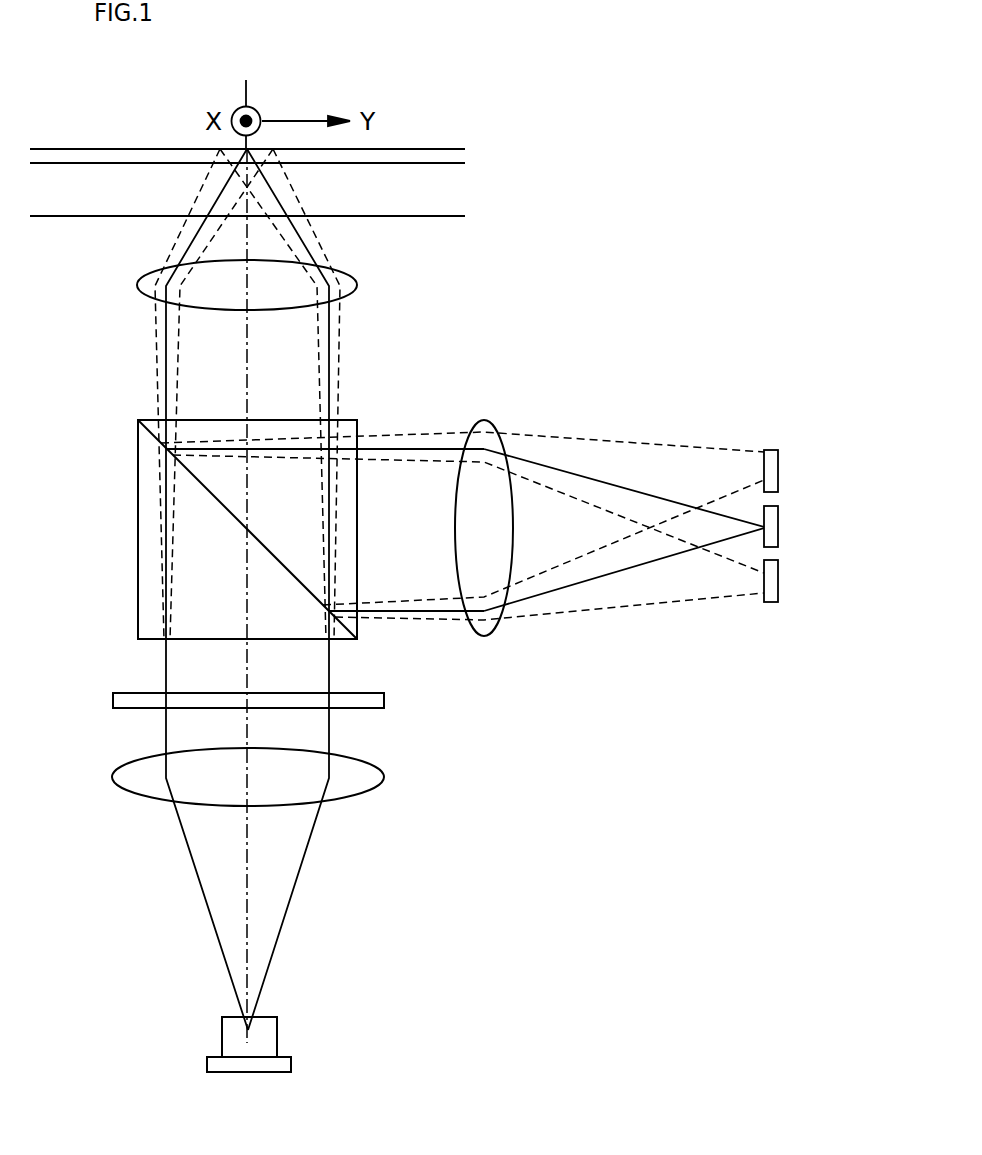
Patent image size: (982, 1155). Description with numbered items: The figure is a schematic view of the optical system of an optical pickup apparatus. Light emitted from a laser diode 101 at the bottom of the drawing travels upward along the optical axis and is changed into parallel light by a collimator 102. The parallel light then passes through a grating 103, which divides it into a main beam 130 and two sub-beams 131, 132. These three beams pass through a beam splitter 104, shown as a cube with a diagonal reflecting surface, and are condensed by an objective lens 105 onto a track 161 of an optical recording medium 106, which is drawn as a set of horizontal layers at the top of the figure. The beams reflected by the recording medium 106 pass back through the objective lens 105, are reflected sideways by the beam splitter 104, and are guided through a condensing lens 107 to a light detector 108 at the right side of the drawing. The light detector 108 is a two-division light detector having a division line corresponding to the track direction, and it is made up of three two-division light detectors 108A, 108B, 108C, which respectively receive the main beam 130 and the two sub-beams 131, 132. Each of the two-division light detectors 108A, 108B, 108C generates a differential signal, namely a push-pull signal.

The laser diode 101 is at (228, 1037).
The collimator 102 is at (127, 777).
The grating 103 is at (120, 701).
The beam splitter 104 is at (146, 533).
The objective lens 105 is at (203, 300).
The optical recording medium 106 is at (144, 182).
The condensing lens 107 is at (483, 421).
The light detector 108 is at (843, 526).
The two-division light detector 108A is at (778, 527).
The two-division light detector 108B is at (778, 471).
The two-division light detector 108C is at (778, 585).
The main beam 130 is at (331, 355).
The sub-beam 131 is at (343, 326).
The sub-beam 132 is at (320, 380).
The track 161 is at (103, 157).